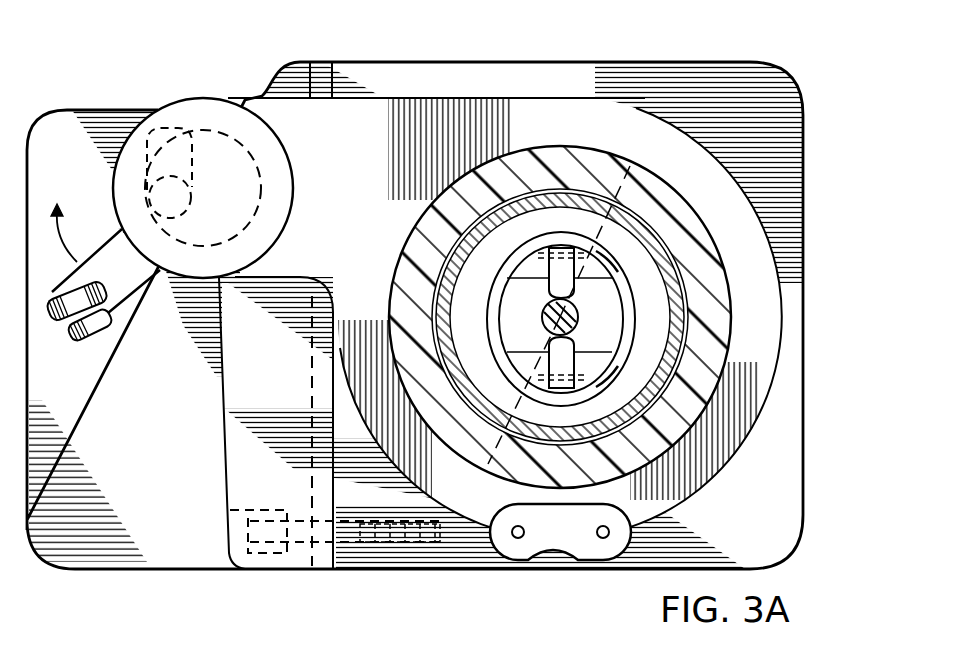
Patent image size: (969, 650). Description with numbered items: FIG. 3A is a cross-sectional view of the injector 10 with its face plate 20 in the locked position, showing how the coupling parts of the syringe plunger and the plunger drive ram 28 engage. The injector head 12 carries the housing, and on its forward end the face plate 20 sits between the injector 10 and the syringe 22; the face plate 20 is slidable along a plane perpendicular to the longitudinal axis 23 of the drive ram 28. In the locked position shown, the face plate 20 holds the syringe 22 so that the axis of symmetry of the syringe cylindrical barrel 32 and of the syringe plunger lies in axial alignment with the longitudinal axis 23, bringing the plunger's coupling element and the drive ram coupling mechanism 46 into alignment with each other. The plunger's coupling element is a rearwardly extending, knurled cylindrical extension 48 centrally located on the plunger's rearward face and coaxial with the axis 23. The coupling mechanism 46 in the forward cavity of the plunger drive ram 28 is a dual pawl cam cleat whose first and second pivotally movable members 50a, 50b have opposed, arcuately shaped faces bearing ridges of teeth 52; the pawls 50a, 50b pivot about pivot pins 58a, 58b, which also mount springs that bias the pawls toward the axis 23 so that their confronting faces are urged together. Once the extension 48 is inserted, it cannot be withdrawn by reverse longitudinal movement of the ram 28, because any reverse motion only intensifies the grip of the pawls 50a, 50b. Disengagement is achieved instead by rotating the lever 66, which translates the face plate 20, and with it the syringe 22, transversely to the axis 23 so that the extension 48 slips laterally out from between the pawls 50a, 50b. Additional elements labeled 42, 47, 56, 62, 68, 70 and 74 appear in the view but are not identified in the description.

The injector 10 is at (648, 51).
The injector head 12 is at (447, 61).
The face plate 20 is at (468, 540).
The syringe 22 is at (449, 248).
The longitudinal axis 23 is at (556, 312).
The plunger drive ram 28 is at (475, 212).
The syringe cylindrical barrel 32 is at (566, 147).
The spring member 42 is at (567, 272).
The coupling mechanism 46 is at (542, 275).
The pivot axis 47 is at (556, 312).
The cylindrical extension 48 is at (624, 305).
The first pivotally movable member 50a is at (650, 255).
The second pivotally movable member 50b is at (566, 358).
The ridges of teeth 52 is at (549, 374).
The ball 56 is at (577, 332).
The pivot pin 58a is at (630, 166).
The pivot pin 58b is at (511, 412).
The retaining ring 62 is at (704, 322).
The rotatable lever 66 is at (102, 330).
The dial 68 is at (180, 170).
The indicator 70 is at (152, 120).
The switch 74 is at (349, 545).